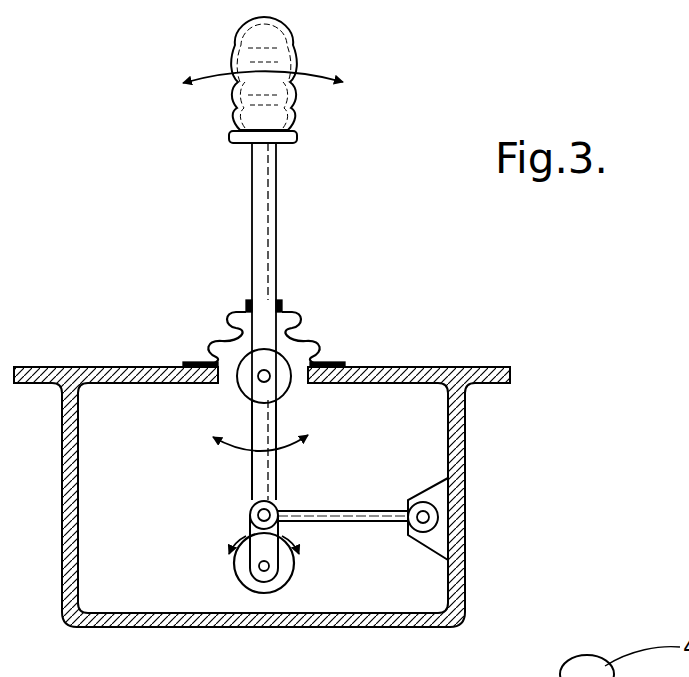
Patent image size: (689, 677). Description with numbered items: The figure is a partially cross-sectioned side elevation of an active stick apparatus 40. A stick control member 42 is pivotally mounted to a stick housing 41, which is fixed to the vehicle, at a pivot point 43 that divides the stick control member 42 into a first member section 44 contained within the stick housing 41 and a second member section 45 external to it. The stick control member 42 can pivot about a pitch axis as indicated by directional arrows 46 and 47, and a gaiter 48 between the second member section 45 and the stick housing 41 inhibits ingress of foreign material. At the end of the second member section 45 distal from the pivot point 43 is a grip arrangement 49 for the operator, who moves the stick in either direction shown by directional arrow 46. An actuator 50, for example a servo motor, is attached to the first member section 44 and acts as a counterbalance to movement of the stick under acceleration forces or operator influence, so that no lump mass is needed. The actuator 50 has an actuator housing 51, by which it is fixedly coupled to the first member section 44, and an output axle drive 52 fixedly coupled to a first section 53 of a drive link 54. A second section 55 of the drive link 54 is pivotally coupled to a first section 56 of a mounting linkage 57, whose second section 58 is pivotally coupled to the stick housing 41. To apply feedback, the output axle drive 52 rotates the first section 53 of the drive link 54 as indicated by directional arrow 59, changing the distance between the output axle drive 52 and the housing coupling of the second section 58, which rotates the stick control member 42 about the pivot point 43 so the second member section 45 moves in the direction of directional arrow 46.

The active stick apparatus 40 is at (449, 136).
The stick housing 41 is at (460, 410).
The stick control member 42 is at (252, 220).
The pivot point 43 is at (267, 374).
The first member section 44 is at (258, 425).
The second member section 45 is at (268, 180).
The directional arrow 46 is at (220, 75).
The directional arrow 47 is at (213, 440).
The gaiter 48 is at (222, 313).
The grip arrangement 49 is at (237, 33).
The actuator 50 is at (253, 583).
The actuator housing 51 is at (283, 585).
The output axle drive 52 is at (262, 568).
The first section of drive link 53 is at (292, 577).
The drive link 54 is at (245, 562).
The second section of drive link 55 is at (270, 503).
The first section of mounting linkage 56 is at (290, 512).
The mounting linkage 57 is at (390, 512).
The second section of mounting linkage 58 is at (440, 522).
The directional arrow 59 is at (232, 540).